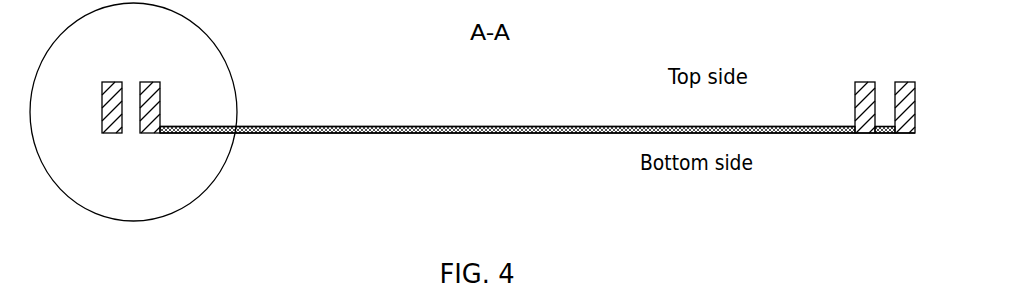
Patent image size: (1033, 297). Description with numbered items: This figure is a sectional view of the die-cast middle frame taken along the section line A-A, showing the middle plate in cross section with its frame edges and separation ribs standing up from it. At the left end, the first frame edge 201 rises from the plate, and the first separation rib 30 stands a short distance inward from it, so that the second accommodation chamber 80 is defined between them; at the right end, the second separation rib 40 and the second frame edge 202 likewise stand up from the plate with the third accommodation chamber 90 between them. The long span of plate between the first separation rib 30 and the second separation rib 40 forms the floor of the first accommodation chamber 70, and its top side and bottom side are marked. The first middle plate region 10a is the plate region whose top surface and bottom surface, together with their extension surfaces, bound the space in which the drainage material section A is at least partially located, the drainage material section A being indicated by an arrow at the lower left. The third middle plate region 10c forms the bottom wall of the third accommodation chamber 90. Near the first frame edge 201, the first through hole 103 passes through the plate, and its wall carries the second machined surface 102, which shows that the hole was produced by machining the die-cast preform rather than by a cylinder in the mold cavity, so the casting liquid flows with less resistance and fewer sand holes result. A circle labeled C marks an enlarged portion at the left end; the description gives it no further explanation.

The first middle plate region 10a is at (510, 126).
The third middle plate region 10c is at (882, 134).
The first accommodation chamber 70 is at (527, 90).
The first separation rib 30 is at (153, 83).
The second separation rib 40 is at (859, 82).
The second accommodation chamber 80 is at (143, 70).
The third accommodation chamber 90 is at (882, 92).
The first frame edge 201 is at (106, 82).
The second frame edge 202 is at (900, 82).
The second machined surface 102 is at (121, 136).
The first through hole 103 is at (131, 137).
The drainage material section A is at (102, 130).
The enlarged region C is at (66, 32).